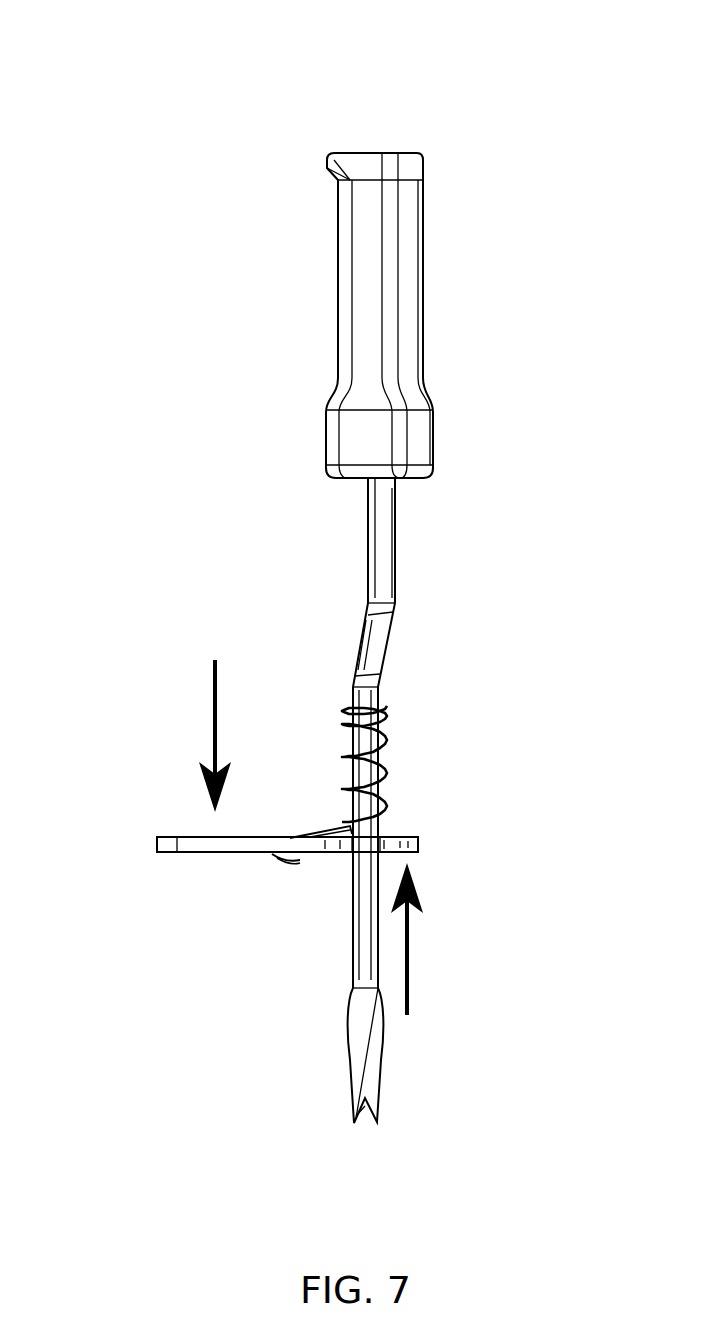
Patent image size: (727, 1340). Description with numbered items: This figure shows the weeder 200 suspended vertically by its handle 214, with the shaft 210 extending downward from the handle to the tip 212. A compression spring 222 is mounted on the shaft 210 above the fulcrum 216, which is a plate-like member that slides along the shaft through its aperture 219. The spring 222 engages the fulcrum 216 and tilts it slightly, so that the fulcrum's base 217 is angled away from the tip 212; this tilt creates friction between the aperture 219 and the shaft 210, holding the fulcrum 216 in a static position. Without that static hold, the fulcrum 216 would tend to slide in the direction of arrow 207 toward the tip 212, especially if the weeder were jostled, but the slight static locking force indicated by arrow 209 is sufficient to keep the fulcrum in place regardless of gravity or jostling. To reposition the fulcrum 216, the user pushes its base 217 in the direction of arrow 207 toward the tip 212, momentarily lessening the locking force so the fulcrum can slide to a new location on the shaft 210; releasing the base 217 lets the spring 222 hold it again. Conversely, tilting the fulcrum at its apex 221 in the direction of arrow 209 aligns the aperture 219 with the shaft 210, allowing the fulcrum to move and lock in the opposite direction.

The weeder 200 is at (200, 48).
The arrow 207 is at (210, 698).
The arrow 209 is at (403, 998).
The shaft 210 is at (365, 932).
The tip 212 is at (365, 1133).
The handle 214 is at (402, 333).
The fulcrum 216 is at (235, 845).
The base 217 is at (165, 845).
The aperture 219 is at (392, 826).
The apex 221 is at (418, 845).
The compression spring 222 is at (385, 726).